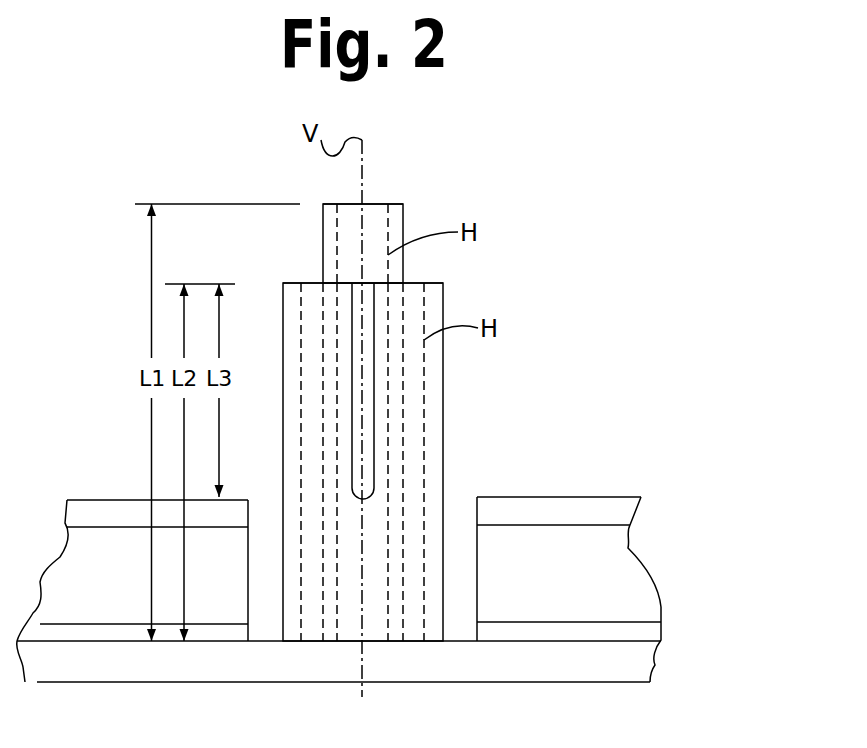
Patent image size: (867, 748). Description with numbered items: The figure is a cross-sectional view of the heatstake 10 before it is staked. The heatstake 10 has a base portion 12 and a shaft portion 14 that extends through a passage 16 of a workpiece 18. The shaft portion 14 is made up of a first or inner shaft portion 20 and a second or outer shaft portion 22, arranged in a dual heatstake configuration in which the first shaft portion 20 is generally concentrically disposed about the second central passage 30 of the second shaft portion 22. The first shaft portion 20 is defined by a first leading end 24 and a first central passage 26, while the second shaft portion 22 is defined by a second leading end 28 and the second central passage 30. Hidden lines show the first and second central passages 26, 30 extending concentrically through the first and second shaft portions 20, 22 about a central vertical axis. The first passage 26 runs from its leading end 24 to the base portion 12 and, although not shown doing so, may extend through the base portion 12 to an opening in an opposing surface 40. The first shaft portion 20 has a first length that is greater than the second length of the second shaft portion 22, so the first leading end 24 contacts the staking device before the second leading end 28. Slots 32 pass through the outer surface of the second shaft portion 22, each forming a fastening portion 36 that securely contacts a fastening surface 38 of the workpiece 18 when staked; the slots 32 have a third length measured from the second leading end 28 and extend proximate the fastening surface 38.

The heatstake 10 is at (231, 131).
The base portion 12 is at (512, 670).
The shaft portion 14 is at (380, 186).
The passage 16 is at (455, 510).
The workpiece 18 is at (666, 577).
The first shaft portion 20 is at (322, 240).
The second shaft portion 22 is at (283, 348).
The first leading end 24 is at (330, 204).
The first central passage 26 is at (372, 224).
The second leading end 28 is at (292, 283).
The second central passage 30 is at (408, 412).
The slots 32 is at (355, 325).
The fastening portion 36 is at (315, 413).
The fastening surface 38 is at (530, 497).
The opposing surface 40 is at (428, 682).